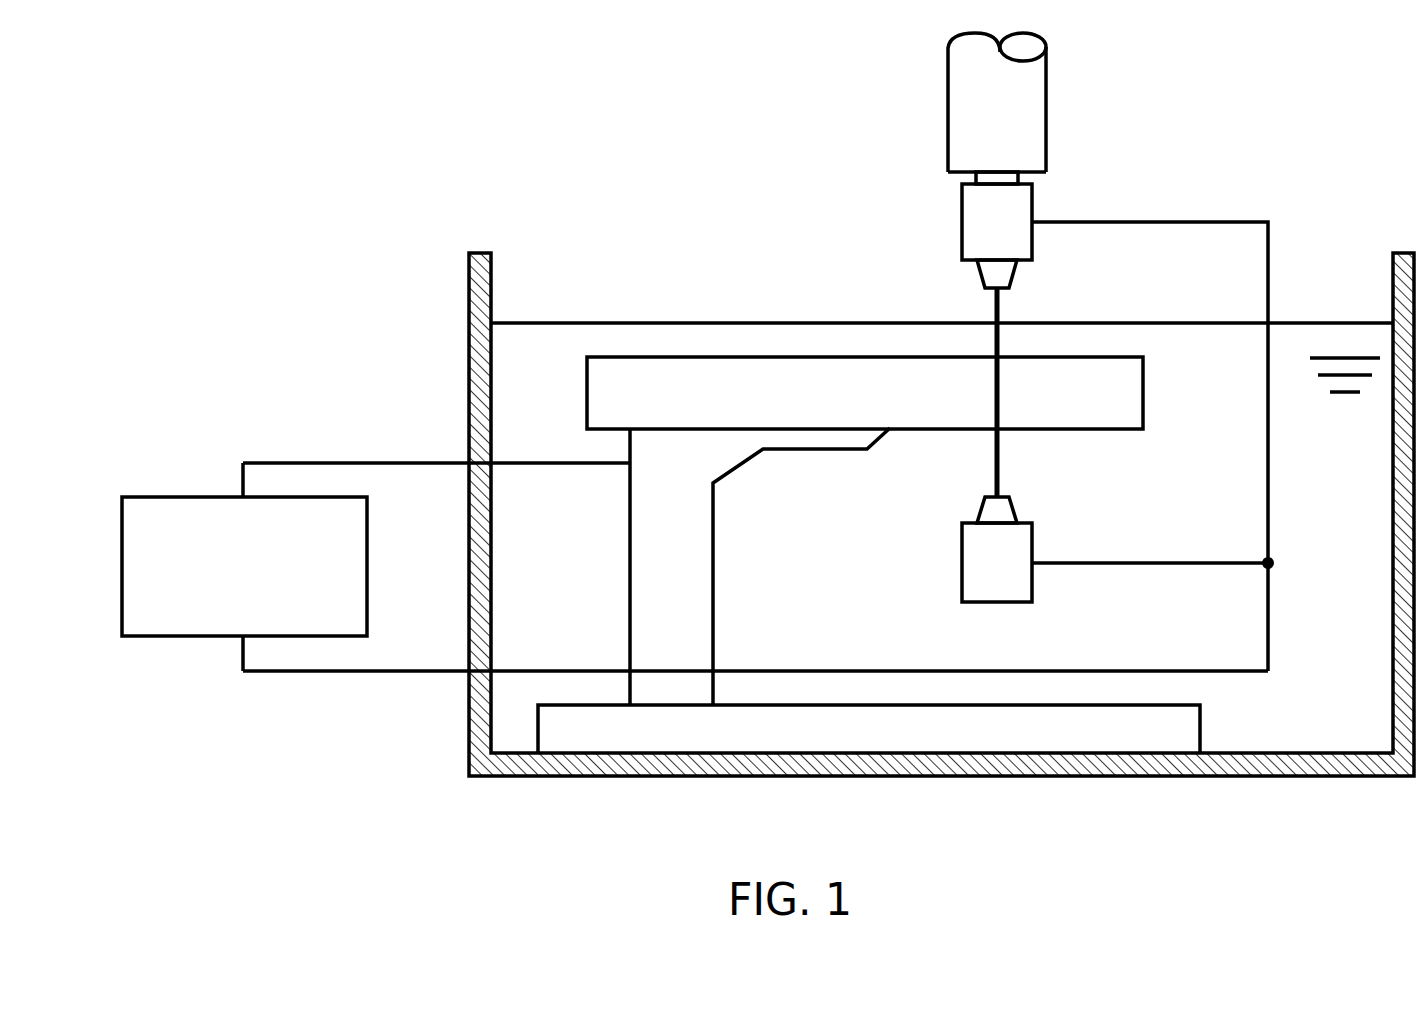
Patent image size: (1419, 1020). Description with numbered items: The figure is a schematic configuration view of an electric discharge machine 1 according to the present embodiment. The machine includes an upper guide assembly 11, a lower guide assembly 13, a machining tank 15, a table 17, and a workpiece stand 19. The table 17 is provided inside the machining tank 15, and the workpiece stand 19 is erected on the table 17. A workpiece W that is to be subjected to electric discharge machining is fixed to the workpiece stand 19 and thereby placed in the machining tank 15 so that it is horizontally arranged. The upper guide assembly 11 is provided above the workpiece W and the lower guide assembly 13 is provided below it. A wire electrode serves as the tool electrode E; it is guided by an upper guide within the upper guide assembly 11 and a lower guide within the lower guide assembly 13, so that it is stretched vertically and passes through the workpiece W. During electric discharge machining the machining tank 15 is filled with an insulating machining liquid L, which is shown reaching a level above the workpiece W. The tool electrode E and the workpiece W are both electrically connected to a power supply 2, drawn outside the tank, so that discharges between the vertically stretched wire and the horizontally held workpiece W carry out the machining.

The electric discharge machine 1 is at (362, 170).
The power supply 2 is at (187, 505).
The upper guide assembly 11 is at (1025, 200).
The lower guide assembly 13 is at (973, 565).
The machining tank 15 is at (480, 279).
The table 17 is at (835, 729).
The workpiece stand 19 is at (682, 517).
The workpiece W is at (733, 372).
The tool electrode E is at (999, 452).
The machining liquid L is at (1320, 335).